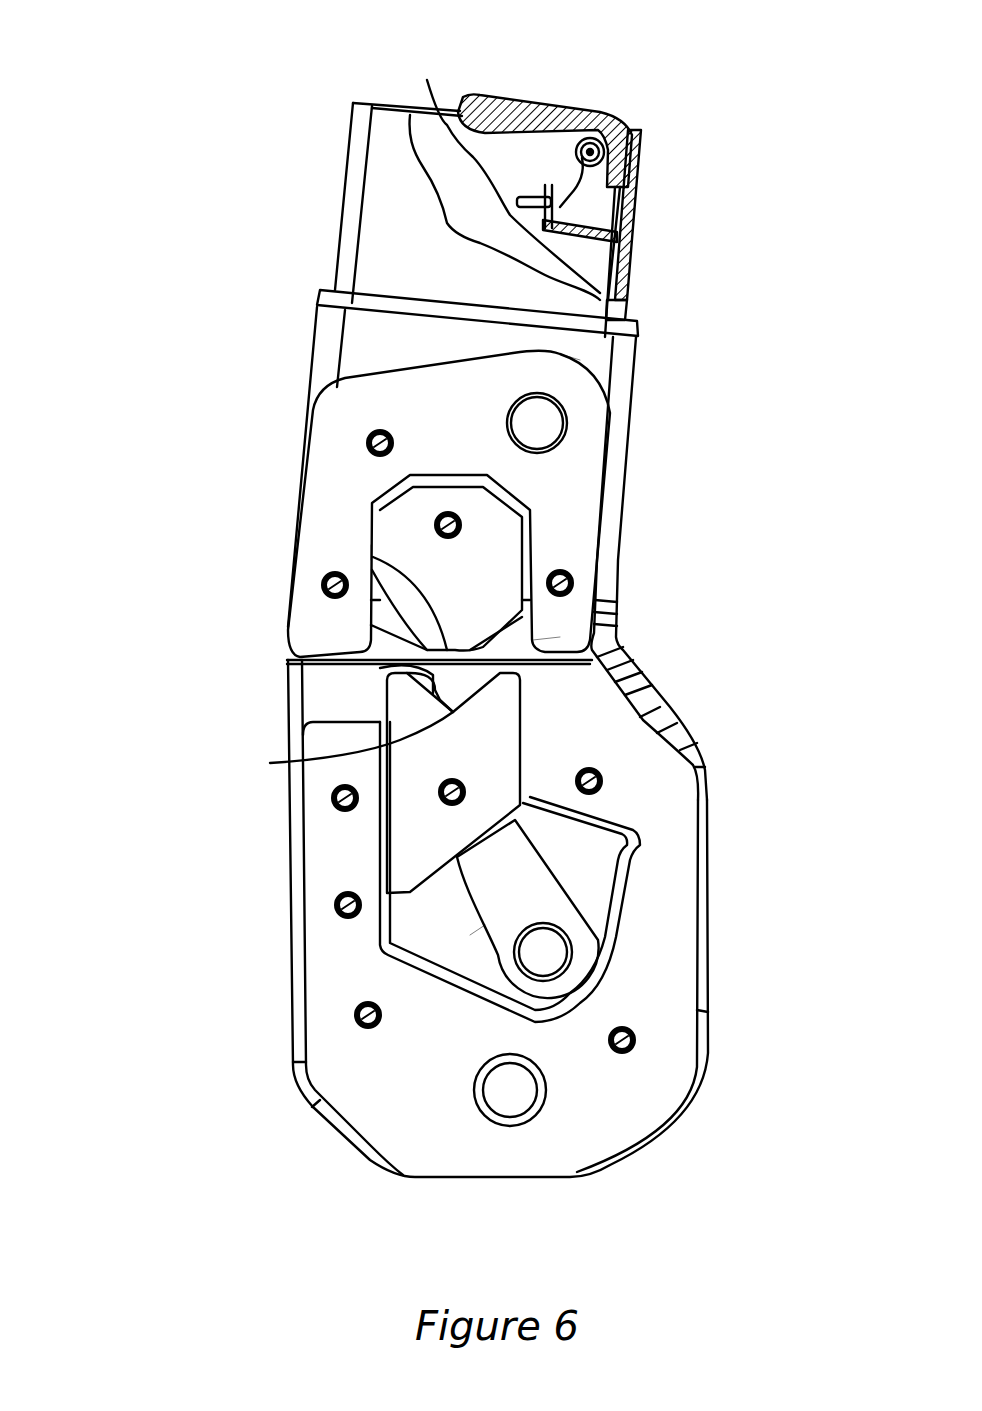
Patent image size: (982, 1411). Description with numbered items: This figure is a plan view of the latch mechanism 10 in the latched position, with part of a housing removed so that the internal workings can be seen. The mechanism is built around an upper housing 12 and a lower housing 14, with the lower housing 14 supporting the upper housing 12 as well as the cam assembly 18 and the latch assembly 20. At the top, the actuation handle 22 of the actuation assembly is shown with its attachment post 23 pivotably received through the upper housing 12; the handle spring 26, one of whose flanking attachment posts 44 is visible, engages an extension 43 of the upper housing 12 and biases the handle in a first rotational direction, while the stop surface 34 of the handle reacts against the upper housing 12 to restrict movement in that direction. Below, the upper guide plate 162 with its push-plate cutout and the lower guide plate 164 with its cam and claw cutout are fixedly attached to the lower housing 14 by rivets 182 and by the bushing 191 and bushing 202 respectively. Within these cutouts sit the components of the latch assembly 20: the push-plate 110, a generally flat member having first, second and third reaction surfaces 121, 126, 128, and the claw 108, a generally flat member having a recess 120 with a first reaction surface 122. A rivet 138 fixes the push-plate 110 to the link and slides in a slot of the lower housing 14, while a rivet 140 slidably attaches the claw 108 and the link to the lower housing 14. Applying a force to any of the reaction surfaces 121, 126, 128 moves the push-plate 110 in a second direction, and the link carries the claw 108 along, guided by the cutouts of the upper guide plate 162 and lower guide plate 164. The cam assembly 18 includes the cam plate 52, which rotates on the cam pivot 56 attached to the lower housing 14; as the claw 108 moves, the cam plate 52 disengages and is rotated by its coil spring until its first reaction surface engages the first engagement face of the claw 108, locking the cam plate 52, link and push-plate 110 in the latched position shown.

The latch mechanism 10 is at (228, 56).
The upper housing 12 is at (645, 205).
The lower housing 14 is at (627, 405).
The cam assembly 18 is at (475, 925).
The latch assembly 20 is at (530, 717).
The actuation handle 22 is at (550, 95).
The attachment post 23 is at (618, 122).
The handle spring 26 is at (556, 183).
The stop surface 34 is at (618, 168).
The extension 43 is at (617, 283).
The second attachment post 44 is at (617, 244).
The cam plate 52 is at (560, 890).
The cam pivot 56 is at (552, 950).
The claw 108 is at (525, 668).
The push-plate 110 is at (513, 573).
The recess 120 is at (270, 763).
The first reaction surface 121 is at (370, 553).
The first reaction surface 122 is at (380, 668).
The second reaction surface 126 is at (400, 660).
The third reaction surface 128 is at (533, 640).
The rivet 138 is at (437, 523).
The rivet 140 is at (438, 797).
The upper guide plate 162 is at (585, 492).
The lower guide plate 164 is at (657, 773).
The rivets 182 is at (378, 440).
The bushing 191 is at (548, 418).
The bushing 202 is at (513, 1100).